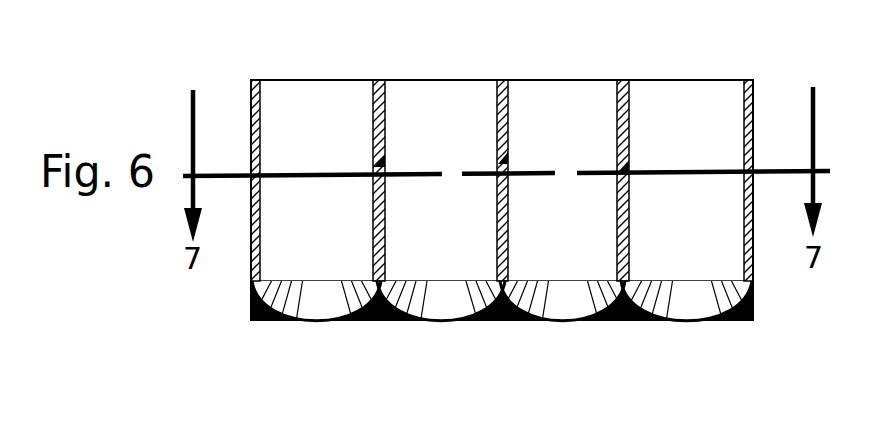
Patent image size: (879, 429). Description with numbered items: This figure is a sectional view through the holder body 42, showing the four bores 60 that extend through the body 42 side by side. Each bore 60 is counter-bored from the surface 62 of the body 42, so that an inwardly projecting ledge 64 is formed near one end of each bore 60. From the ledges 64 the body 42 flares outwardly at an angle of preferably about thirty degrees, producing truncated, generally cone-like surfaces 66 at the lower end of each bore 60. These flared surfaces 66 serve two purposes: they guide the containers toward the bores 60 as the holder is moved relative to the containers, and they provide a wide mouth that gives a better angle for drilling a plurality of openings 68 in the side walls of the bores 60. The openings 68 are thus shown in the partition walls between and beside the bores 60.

The holder body 42 is at (748, 321).
The bore 60 is at (455, 256).
The surface 62 is at (500, 80).
The ledge 64 is at (267, 284).
The truncated generally cone-like surface 66 is at (323, 306).
The opening 68 is at (385, 164).